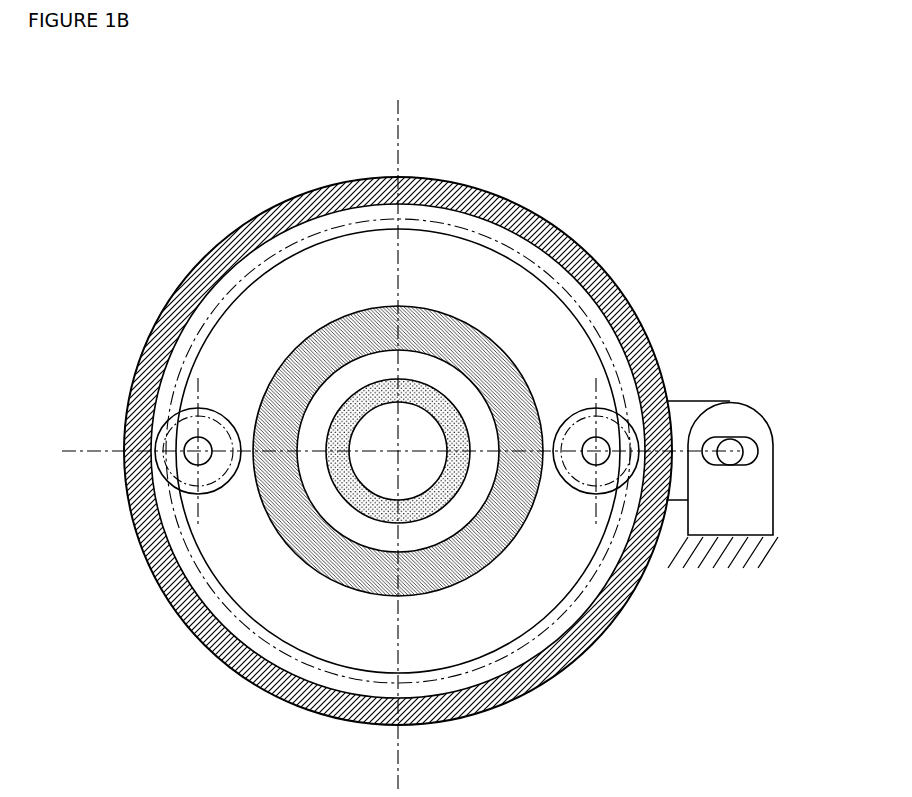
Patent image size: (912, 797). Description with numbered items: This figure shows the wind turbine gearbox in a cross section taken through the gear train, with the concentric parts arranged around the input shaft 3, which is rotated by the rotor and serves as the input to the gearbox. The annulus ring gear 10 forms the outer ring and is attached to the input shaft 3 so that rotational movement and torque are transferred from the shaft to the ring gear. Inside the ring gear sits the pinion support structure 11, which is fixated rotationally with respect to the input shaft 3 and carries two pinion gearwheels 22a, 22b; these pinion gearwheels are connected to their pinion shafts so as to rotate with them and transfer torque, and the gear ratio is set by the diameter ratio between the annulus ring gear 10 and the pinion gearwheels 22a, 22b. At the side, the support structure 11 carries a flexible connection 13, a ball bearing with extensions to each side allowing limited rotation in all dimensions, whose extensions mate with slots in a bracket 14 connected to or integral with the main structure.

The annulus ring gear 10 is at (572, 250).
The pinion support structure 11 is at (520, 465).
The input shaft 3 is at (460, 476).
The pinion gearwheel 22a is at (185, 435).
The pinion gearwheel 22b is at (585, 415).
The flexible connection 13 is at (730, 452).
The bracket 14 is at (736, 486).